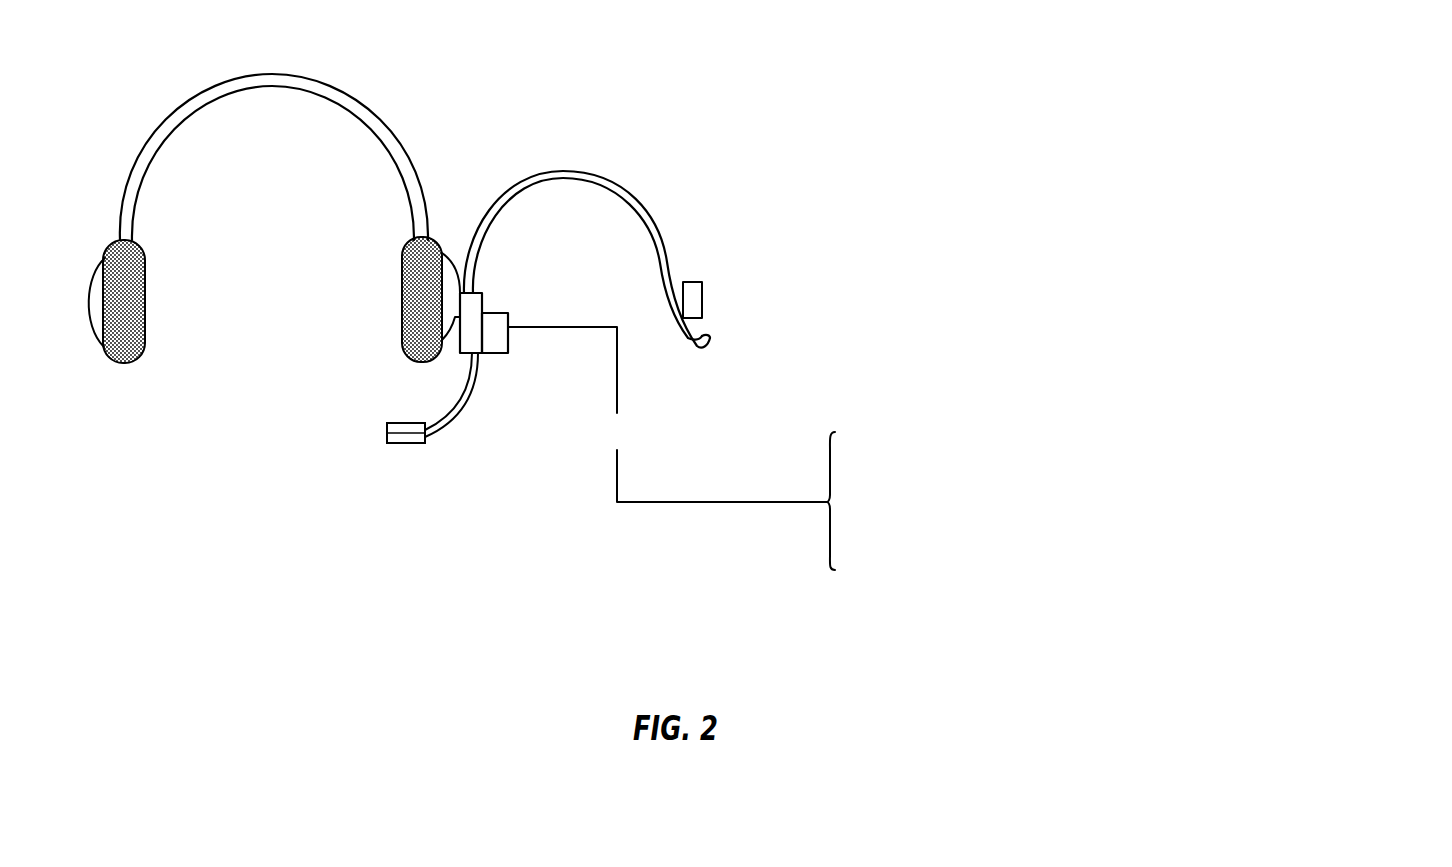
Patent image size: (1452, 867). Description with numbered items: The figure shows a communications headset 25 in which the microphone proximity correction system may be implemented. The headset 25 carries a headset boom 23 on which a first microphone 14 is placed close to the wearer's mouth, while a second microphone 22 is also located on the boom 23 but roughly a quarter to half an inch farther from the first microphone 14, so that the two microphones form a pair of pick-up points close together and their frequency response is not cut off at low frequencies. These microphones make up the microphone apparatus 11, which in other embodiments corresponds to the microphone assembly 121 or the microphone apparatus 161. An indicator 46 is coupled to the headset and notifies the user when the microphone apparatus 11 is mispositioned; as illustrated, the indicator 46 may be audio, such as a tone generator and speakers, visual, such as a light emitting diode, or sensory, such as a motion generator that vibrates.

The headset 25 is at (380, 120).
The first microphone 14 is at (400, 420).
The second microphone 22 is at (398, 443).
The headset boom 23 is at (388, 433).
The microphone apparatus 11 is at (290, 411).
The microphone assembly 121 is at (290, 411).
The microphone apparatus 161 is at (290, 411).
The indicator 46 is at (703, 302).